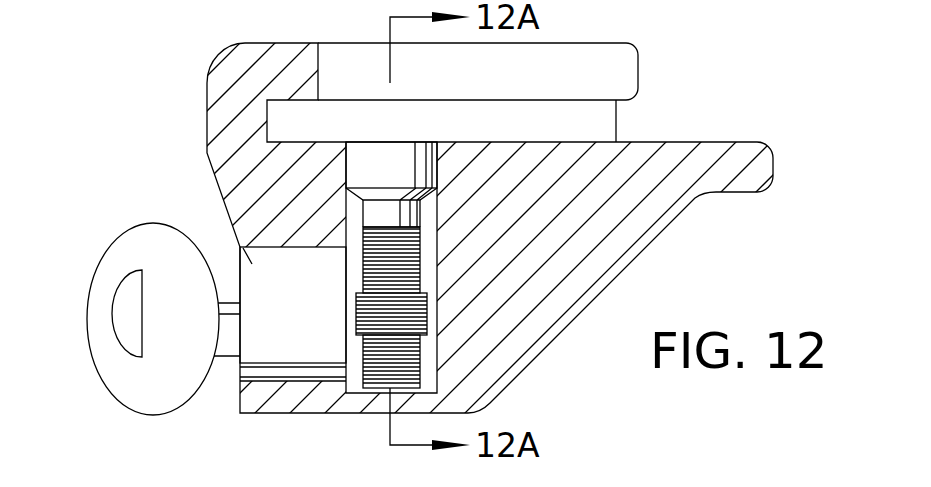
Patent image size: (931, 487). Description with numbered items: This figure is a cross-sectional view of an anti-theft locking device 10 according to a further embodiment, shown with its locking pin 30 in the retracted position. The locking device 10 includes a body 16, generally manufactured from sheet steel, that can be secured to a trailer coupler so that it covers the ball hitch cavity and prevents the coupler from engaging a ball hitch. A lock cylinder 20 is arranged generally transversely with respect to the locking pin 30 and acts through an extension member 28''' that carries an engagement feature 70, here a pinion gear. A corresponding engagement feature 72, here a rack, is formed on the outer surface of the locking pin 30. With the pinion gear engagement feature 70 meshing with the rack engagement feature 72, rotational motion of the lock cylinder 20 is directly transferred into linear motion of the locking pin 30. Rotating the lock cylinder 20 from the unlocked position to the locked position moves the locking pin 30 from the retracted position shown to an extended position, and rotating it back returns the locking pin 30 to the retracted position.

The locking device 10 is at (150, 82).
The body 16 is at (740, 156).
The lock cylinder 20 is at (240, 240).
The locking pin 30 is at (370, 157).
The engagement feature 72 is at (372, 263).
The engagement feature 70 is at (358, 305).
The extension member 28''' is at (353, 246).